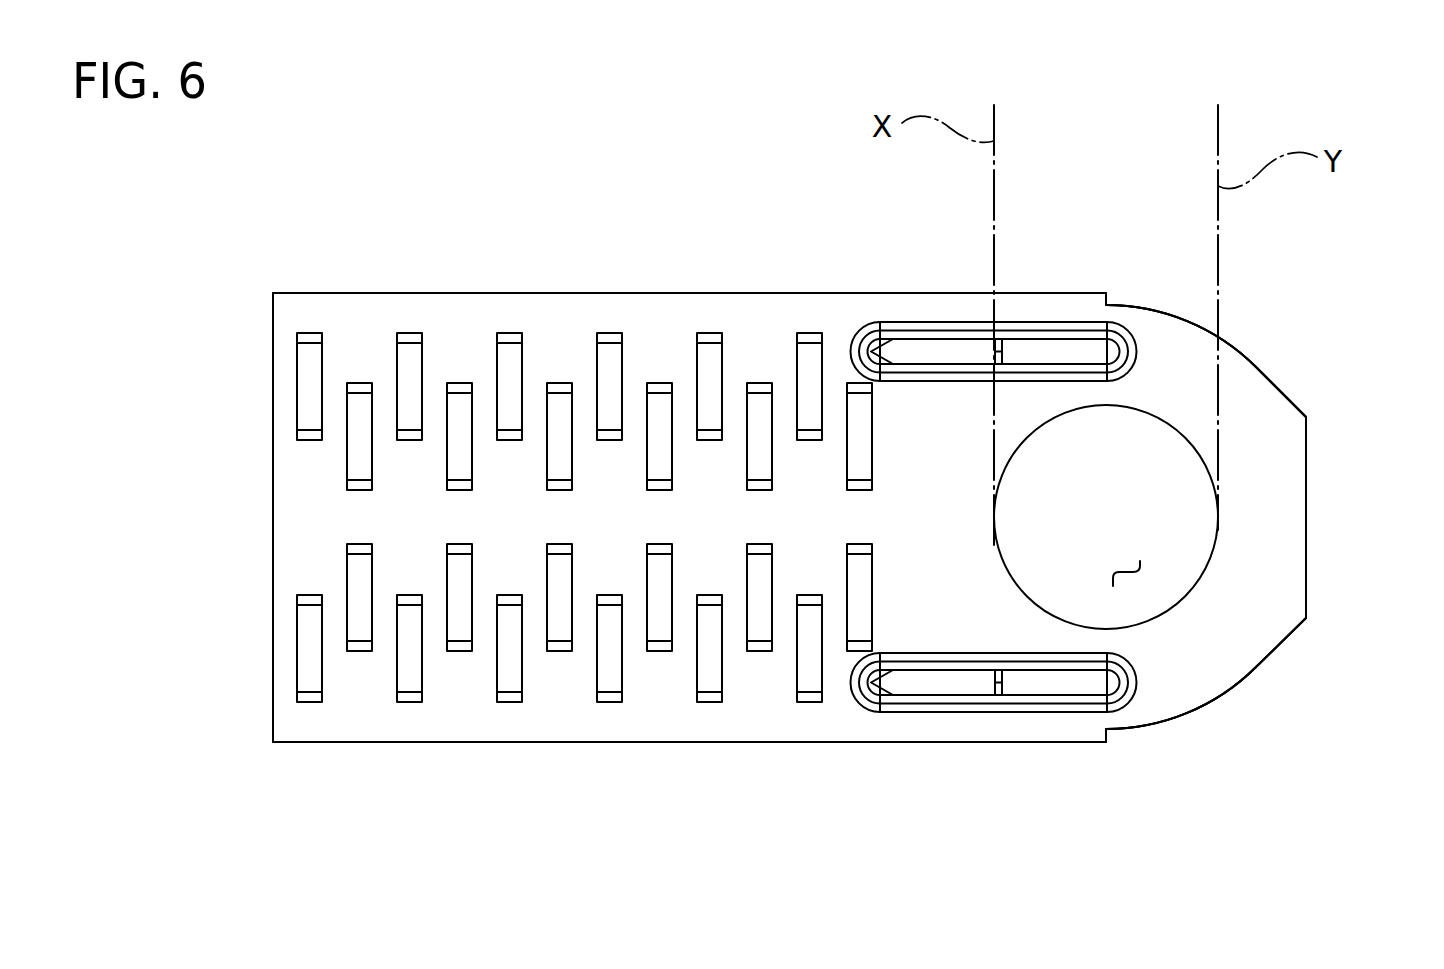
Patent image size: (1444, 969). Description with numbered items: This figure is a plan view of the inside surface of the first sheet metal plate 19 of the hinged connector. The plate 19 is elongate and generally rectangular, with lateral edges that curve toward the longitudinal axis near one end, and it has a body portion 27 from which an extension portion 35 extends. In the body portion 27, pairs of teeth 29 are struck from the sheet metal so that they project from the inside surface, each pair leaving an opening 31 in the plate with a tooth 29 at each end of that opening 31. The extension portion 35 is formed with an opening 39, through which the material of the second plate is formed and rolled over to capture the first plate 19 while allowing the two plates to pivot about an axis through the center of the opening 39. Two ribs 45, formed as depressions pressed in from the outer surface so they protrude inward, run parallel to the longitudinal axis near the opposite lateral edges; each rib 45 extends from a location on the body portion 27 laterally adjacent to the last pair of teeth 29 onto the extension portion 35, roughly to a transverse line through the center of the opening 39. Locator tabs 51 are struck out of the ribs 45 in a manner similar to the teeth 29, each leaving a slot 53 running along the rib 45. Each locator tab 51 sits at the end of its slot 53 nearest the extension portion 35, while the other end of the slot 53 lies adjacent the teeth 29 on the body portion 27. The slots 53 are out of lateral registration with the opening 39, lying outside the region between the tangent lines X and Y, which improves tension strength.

The first sheet metal plate 19 is at (728, 160).
The body portion 27 is at (308, 528).
The teeth 29 is at (455, 548).
The opening 31 is at (660, 455).
The extension portion 35 is at (1190, 655).
The opening 39 is at (1127, 573).
The ribs 45 is at (1082, 330).
The locator tabs 51 is at (1005, 350).
The slot 53 is at (932, 350).